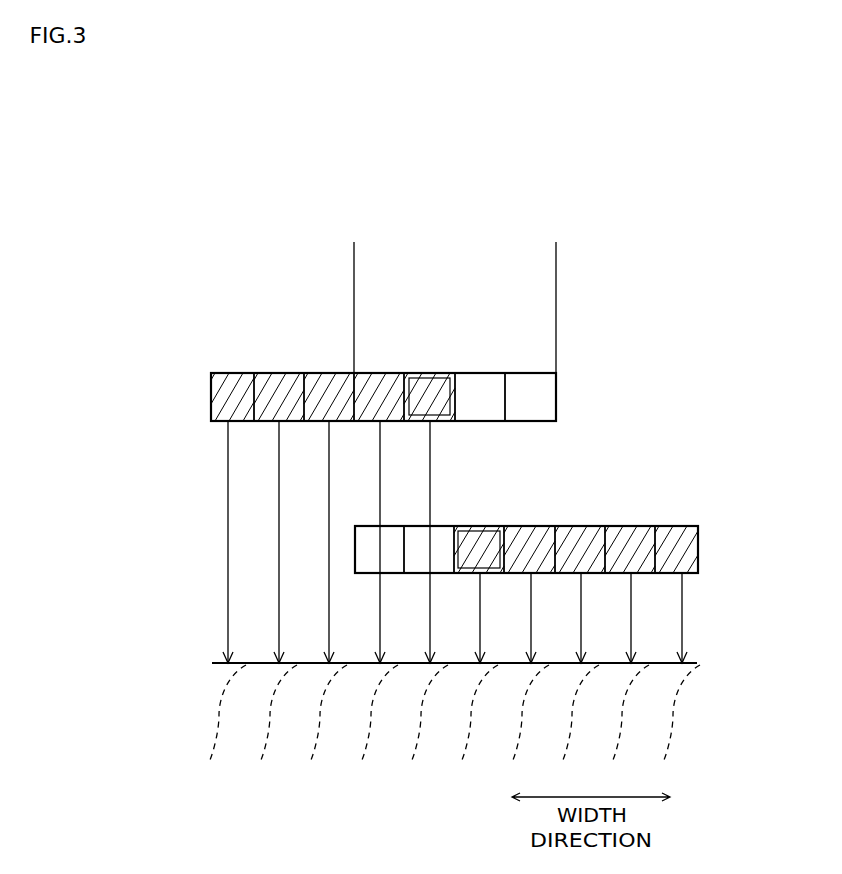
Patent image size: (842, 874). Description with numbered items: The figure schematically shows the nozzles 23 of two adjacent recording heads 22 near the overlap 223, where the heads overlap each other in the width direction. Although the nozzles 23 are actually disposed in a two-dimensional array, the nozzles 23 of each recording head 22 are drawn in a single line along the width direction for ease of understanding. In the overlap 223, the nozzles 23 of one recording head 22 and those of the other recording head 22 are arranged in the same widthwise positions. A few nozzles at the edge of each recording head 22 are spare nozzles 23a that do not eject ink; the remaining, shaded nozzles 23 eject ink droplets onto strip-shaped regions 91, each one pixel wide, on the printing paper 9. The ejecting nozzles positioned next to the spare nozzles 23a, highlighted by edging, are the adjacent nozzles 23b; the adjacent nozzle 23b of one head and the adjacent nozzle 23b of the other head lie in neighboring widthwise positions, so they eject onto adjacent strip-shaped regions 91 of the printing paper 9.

The recording head 22 is at (454, 427).
The nozzle 23 is at (454, 428).
The spare nozzle 23a is at (455, 428).
The adjacent nozzle 23b is at (485, 545).
The overlap 223 is at (354, 252).
The printing paper 9 is at (461, 718).
The strip-shaped region 91 is at (245, 737).